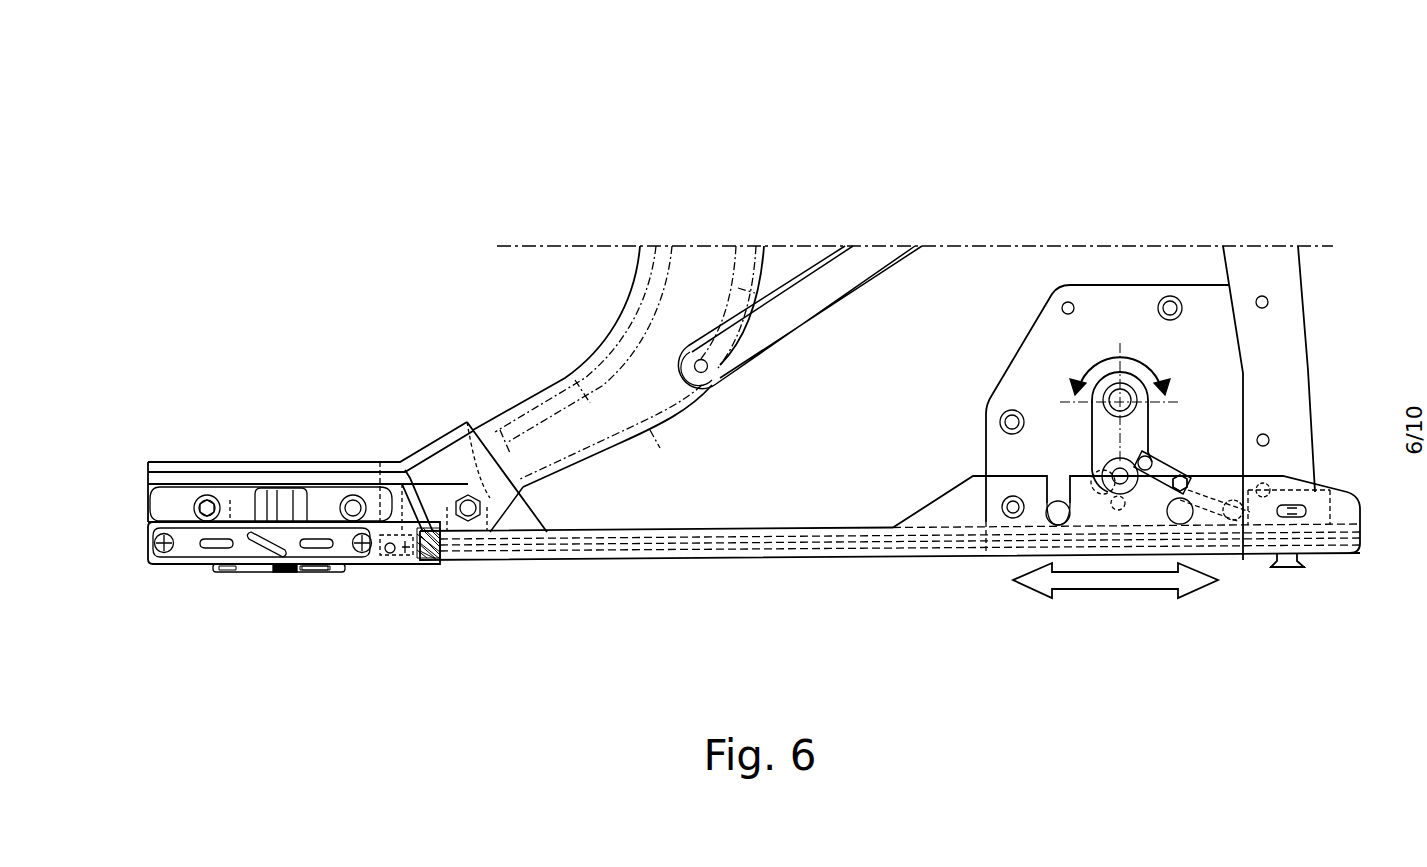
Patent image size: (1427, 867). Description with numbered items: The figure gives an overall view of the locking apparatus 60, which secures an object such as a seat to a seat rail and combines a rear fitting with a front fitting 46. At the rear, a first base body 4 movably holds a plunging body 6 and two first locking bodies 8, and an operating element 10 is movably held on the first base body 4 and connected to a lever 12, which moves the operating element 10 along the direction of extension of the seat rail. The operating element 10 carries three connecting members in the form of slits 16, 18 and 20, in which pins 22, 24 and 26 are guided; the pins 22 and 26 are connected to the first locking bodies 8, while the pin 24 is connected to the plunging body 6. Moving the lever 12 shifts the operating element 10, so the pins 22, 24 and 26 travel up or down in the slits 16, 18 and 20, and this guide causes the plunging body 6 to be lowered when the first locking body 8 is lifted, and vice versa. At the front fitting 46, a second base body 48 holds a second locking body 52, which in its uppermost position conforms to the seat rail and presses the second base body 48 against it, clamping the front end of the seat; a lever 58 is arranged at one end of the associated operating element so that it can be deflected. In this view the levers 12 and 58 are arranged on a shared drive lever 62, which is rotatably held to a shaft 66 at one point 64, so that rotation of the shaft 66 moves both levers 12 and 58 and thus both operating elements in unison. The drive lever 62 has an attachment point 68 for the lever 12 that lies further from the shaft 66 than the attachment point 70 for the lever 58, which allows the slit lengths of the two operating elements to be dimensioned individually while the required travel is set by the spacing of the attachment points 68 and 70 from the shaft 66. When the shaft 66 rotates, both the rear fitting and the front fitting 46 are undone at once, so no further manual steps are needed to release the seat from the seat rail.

The first base body 4 is at (200, 496).
The plunging body 6 is at (309, 572).
The first locking body 8 is at (236, 572).
The operating element 10 is at (157, 556).
The lever 12 is at (740, 548).
The slit 16 is at (232, 520).
The slit 18 is at (264, 547).
The slit 20 is at (336, 498).
The pin 22 is at (230, 549).
The pin 24 is at (278, 573).
The pin 26 is at (336, 549).
The front fitting 46 is at (1350, 228).
The second base body 48 is at (1320, 506).
The second locking body 52 is at (1290, 568).
The lever 58 is at (1188, 482).
The locking apparatus 60 is at (940, 147).
The drive lever 62 is at (1087, 440).
The point 64 is at (1140, 389).
The shaft 66 is at (1130, 395).
The attachment point 68 is at (1107, 549).
The attachment point 70 is at (1152, 455).